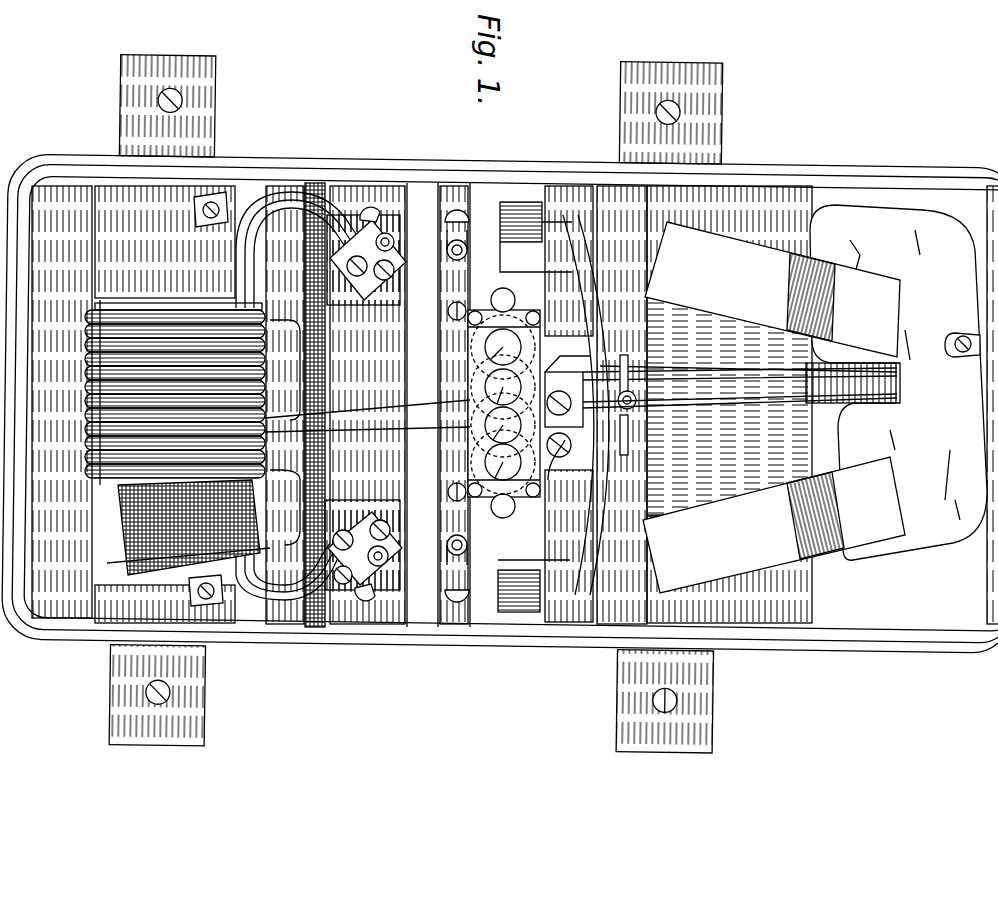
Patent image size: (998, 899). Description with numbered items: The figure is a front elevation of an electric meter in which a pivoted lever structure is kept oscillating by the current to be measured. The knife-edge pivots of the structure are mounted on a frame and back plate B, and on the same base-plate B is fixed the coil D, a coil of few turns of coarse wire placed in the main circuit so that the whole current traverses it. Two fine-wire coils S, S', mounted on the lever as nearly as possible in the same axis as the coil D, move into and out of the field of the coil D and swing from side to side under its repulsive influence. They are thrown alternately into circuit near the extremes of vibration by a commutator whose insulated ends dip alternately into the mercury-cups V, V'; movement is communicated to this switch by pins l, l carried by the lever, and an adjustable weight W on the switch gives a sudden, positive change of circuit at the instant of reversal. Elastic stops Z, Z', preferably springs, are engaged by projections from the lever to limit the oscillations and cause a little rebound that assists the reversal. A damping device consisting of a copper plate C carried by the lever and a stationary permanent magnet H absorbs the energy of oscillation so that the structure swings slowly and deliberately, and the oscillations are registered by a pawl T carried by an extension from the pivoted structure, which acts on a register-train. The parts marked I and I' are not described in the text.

The frame and back plate B is at (858, 620).
The stop Z is at (219, 173).
The stop Z' is at (210, 633).
The mercury-cup V is at (536, 188).
The mercury-cup V' is at (534, 620).
The coil S is at (164, 389).
The coil S' is at (178, 527).
The coil D is at (100, 480).
The permanent magnet H is at (774, 407).
The copper plate C is at (896, 382).
The pawl T is at (700, 400).
The pins l is at (628, 365).
The adjustable weight W is at (633, 408).
The indicator I is at (546, 414).
The indicator bracket I' is at (587, 418).